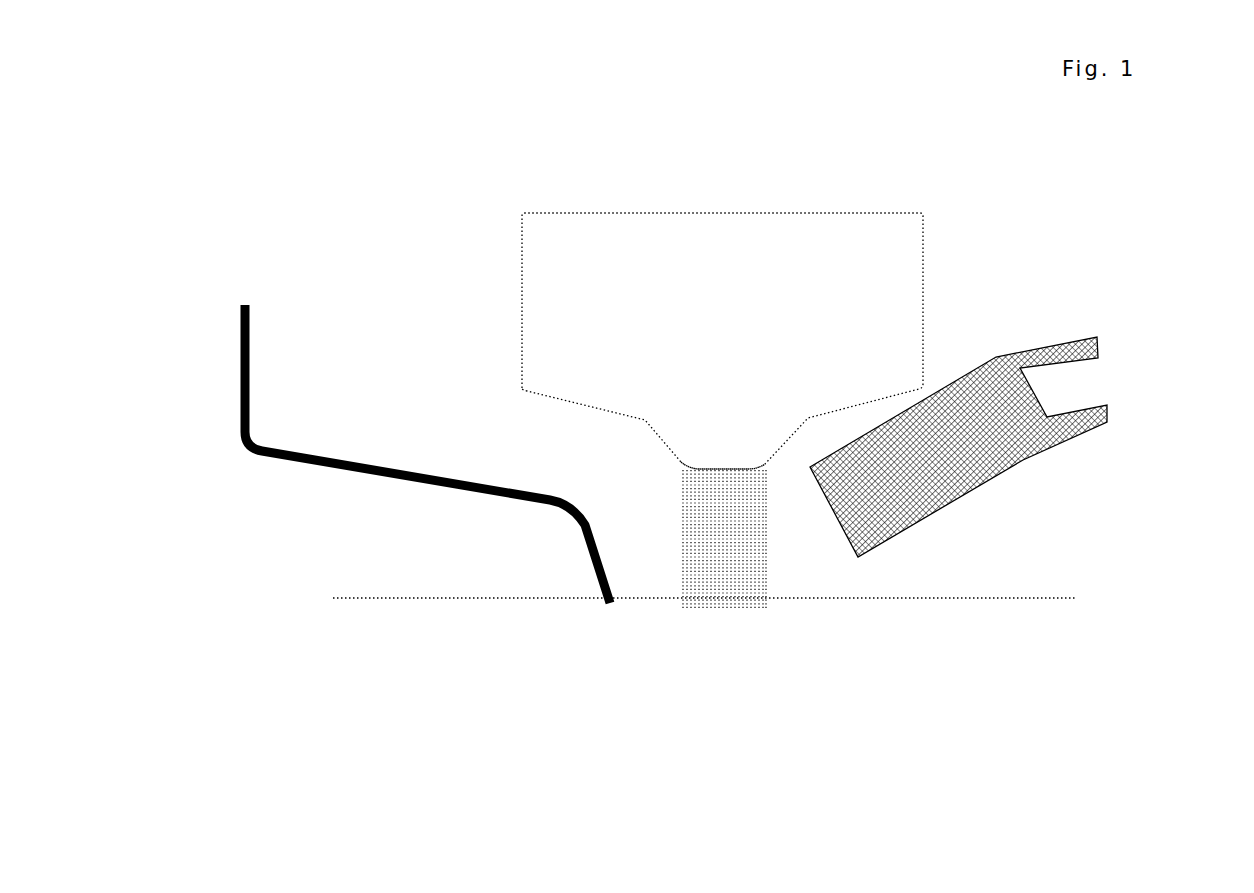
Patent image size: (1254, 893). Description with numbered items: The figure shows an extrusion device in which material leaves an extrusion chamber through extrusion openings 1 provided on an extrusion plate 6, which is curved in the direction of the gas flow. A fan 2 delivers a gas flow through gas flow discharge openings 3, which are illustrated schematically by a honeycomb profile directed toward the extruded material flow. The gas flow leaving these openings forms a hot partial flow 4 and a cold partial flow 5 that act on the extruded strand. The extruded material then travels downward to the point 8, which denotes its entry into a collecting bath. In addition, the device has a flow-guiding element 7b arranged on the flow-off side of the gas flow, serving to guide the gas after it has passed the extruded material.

The extrusion openings 1 is at (712, 465).
The fan 2 is at (1093, 375).
The gas flow discharge openings 3 is at (978, 444).
The hot partial flow 4 is at (783, 523).
The cold partial flow 5 is at (837, 553).
The extrusion plate 6 is at (667, 442).
The flow-guiding element on the flow-off side 7b is at (428, 493).
The entry into collecting bath 8 is at (673, 615).